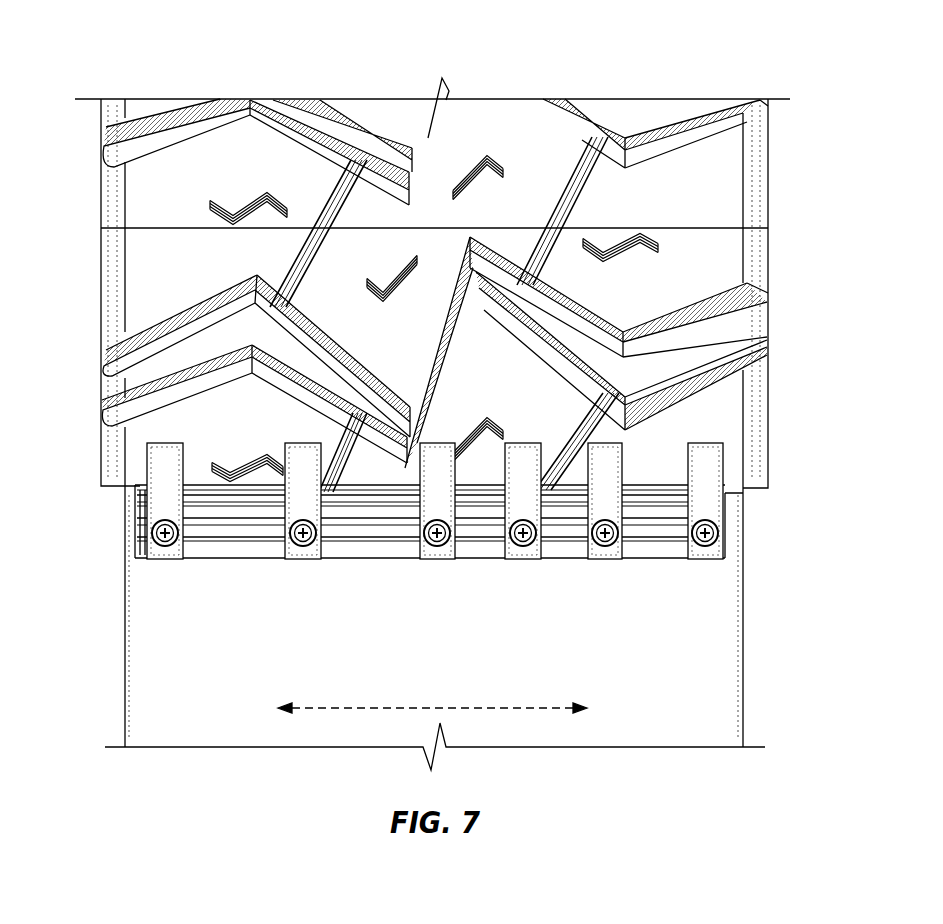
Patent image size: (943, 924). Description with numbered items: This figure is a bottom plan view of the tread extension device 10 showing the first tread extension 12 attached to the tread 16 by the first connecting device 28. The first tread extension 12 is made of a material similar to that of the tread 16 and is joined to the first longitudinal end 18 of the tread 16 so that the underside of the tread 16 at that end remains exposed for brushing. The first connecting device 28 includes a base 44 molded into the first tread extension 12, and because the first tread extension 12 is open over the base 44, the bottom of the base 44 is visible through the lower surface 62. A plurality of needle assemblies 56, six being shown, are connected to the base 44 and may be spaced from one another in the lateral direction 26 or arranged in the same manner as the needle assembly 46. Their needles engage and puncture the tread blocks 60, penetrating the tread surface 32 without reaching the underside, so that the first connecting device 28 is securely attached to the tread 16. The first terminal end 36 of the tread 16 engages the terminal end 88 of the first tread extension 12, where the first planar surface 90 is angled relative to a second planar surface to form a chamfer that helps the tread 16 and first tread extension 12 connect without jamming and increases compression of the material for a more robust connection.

The tread extension device 10 is at (750, 60).
The first tread extension 12 is at (718, 657).
The tread 16 is at (712, 272).
The first longitudinal end 18 is at (648, 477).
The lateral direction 26 is at (432, 698).
The first connecting device 28 is at (655, 550).
The tread surface 32 is at (160, 262).
The first terminal end 36 is at (477, 485).
The base 44 is at (478, 550).
The needle assembly 46 is at (302, 552).
The needle assemblies 56 is at (125, 533).
The tread blocks 60 is at (178, 417).
The lower surface 62 is at (172, 618).
The terminal end 88 is at (193, 480).
The first planar surface 90 is at (653, 480).